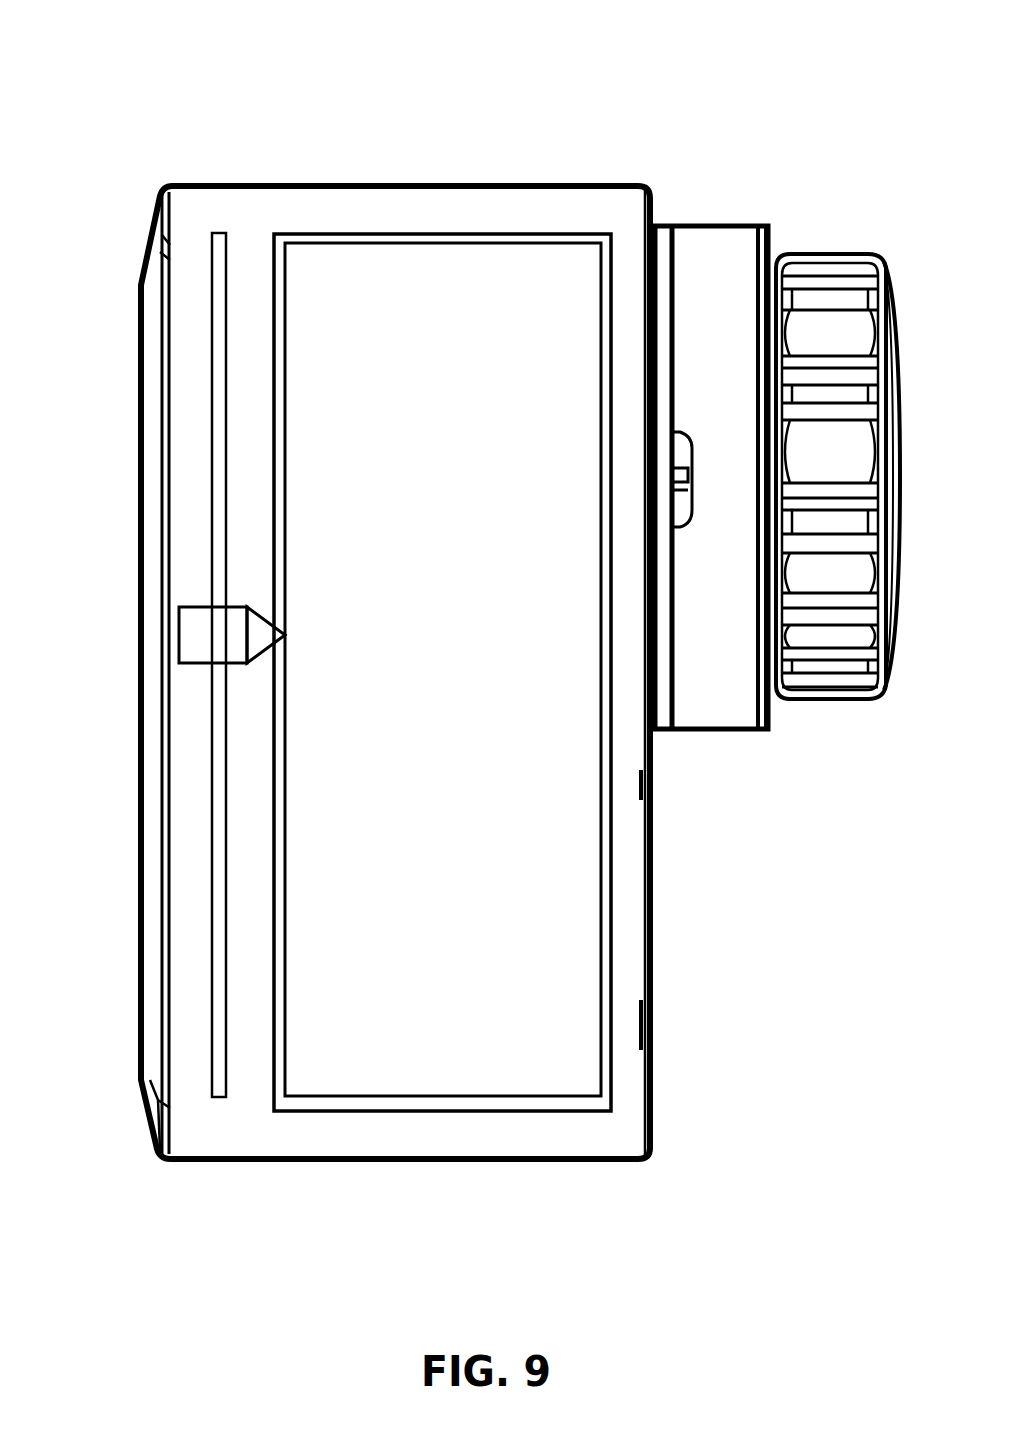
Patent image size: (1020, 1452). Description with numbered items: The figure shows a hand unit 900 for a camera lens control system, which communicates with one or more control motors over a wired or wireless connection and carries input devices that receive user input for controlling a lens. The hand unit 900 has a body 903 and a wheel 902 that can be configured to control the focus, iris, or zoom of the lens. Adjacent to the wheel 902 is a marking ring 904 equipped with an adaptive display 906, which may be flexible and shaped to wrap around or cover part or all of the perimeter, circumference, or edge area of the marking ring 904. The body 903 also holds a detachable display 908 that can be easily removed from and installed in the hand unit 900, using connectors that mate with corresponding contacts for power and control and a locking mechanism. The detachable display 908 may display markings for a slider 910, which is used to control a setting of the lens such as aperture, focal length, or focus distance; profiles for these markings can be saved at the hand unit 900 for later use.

The hand unit 900 is at (152, 90).
The wheel 902 is at (833, 254).
The body 903 is at (450, 182).
The marking ring 904 is at (768, 226).
The adaptive display 906 is at (732, 348).
The detachable display 908 is at (458, 581).
The slider 910 is at (188, 636).